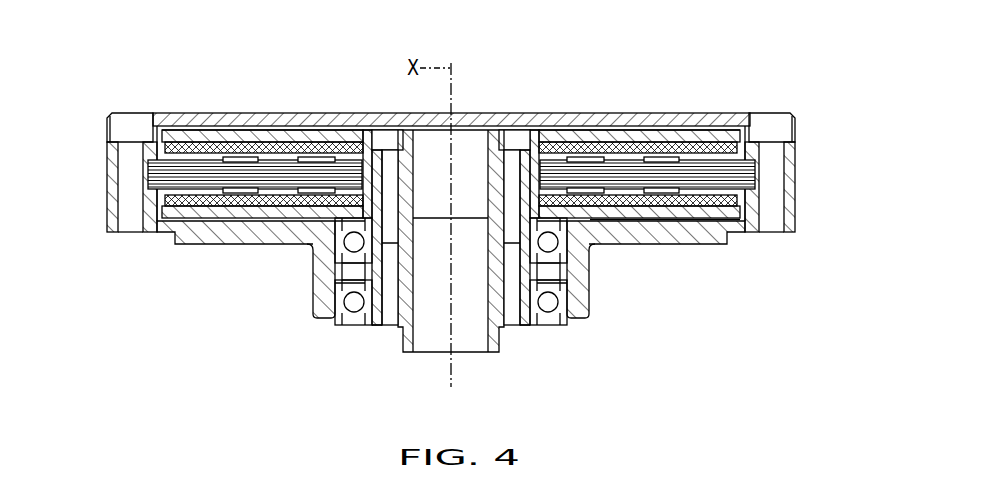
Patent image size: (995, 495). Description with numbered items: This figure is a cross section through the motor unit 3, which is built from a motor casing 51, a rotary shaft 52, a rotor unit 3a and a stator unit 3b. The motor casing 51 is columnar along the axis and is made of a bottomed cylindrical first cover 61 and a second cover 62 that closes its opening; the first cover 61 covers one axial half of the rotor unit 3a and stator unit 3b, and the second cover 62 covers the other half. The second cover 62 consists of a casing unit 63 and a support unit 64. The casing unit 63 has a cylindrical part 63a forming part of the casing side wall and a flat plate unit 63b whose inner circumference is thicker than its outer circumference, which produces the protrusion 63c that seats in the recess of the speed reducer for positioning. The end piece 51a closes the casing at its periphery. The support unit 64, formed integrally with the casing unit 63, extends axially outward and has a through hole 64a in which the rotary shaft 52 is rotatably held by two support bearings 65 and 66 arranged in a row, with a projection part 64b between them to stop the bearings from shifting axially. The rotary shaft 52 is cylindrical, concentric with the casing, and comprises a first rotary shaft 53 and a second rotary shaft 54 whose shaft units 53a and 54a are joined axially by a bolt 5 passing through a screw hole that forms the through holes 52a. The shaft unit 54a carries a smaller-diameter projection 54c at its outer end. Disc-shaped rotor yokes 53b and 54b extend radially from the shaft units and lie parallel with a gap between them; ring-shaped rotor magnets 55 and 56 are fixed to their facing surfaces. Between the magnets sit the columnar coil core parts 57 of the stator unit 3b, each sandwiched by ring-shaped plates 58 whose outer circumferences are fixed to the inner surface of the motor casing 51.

The motor unit 3 is at (804, 86).
The rotor unit 3a is at (213, 124).
The stator unit 3b is at (729, 192).
The bolt 5 is at (383, 130).
The motor casing 51 is at (712, 106).
The rotor case cap 51a is at (122, 161).
The rotary shaft 52 is at (498, 124).
The through holes 52a is at (382, 295).
The first rotary shaft 53 is at (623, 34).
The shaft unit 53a is at (534, 132).
The rotor yoke 53b is at (609, 135).
The second rotary shaft 54 is at (692, 295).
The shaft unit 54a is at (566, 233).
The rotor yoke 54b is at (663, 212).
The projection 54c is at (495, 353).
The rotor magnet 55 is at (658, 145).
The rotor magnet 56 is at (708, 220).
The coil core parts 57 is at (285, 150).
The ring-shaped plates 58 is at (247, 160).
The first cover 61 is at (325, 120).
The second cover 62 is at (198, 250).
The casing unit 63 is at (240, 236).
The cylindrical part 63a is at (107, 206).
The flat plate unit 63b is at (155, 233).
The protrusion 63c is at (218, 238).
The support unit 64 is at (583, 314).
The through hole 64a is at (537, 328).
The projection part 64b is at (345, 327).
The support bearing 65 is at (342, 248).
The support bearing 66 is at (342, 308).